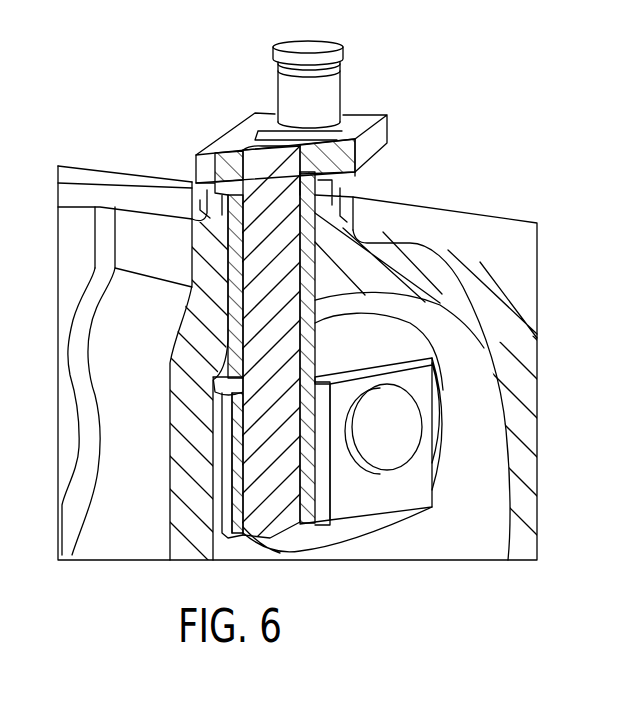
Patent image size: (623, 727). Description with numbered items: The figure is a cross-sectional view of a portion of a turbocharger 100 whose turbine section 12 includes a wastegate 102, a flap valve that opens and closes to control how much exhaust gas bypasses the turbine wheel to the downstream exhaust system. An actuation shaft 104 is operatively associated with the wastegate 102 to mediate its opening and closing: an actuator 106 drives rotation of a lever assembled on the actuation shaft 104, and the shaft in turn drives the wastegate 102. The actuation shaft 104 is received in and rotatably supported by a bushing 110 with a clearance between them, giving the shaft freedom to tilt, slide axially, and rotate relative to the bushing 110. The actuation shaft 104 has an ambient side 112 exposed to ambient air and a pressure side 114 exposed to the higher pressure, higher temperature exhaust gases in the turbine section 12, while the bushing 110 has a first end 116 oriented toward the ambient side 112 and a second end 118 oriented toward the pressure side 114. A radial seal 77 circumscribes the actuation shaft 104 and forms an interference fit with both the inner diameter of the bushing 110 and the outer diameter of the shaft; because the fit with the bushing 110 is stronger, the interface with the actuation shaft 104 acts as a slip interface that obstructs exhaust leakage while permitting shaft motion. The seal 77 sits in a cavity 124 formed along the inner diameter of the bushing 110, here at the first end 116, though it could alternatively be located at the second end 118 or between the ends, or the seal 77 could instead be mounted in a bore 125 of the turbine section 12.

The turbocharger 100 is at (489, 150).
The turbine section 12 is at (480, 262).
The wastegate 102 is at (398, 348).
The actuation shaft 104 is at (257, 265).
The actuator 106 is at (333, 87).
The bushing 110 is at (233, 318).
The ambient side 112 is at (253, 120).
The pressure side 114 is at (292, 562).
The first end 116 is at (197, 193).
The second end 118 is at (206, 378).
The cavity 124 is at (305, 194).
The bore 125 is at (315, 260).
The radial seal 77 is at (320, 172).